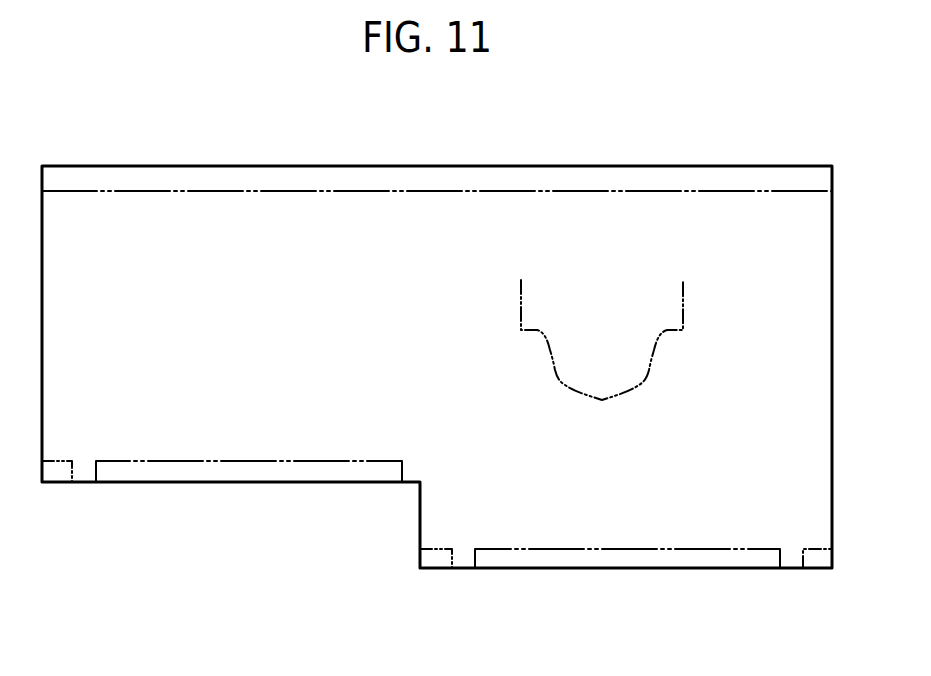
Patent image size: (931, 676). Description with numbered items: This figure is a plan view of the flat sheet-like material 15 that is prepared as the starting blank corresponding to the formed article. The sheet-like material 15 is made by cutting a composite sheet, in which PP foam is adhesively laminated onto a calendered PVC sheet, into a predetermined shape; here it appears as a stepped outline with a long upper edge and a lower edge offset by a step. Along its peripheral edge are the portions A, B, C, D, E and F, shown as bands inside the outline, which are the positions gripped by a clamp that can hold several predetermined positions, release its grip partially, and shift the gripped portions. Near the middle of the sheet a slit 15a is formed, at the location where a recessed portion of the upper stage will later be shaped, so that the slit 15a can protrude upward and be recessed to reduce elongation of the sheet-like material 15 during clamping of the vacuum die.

The sheet-like material 15 is at (713, 148).
The slit 15a is at (602, 364).
The peripheral edge portion A is at (194, 188).
The peripheral edge portion B is at (253, 468).
The peripheral edge portion C is at (638, 555).
The peripheral edge portion D is at (62, 468).
The peripheral edge portion E is at (437, 555).
The peripheral edge portion F is at (820, 555).